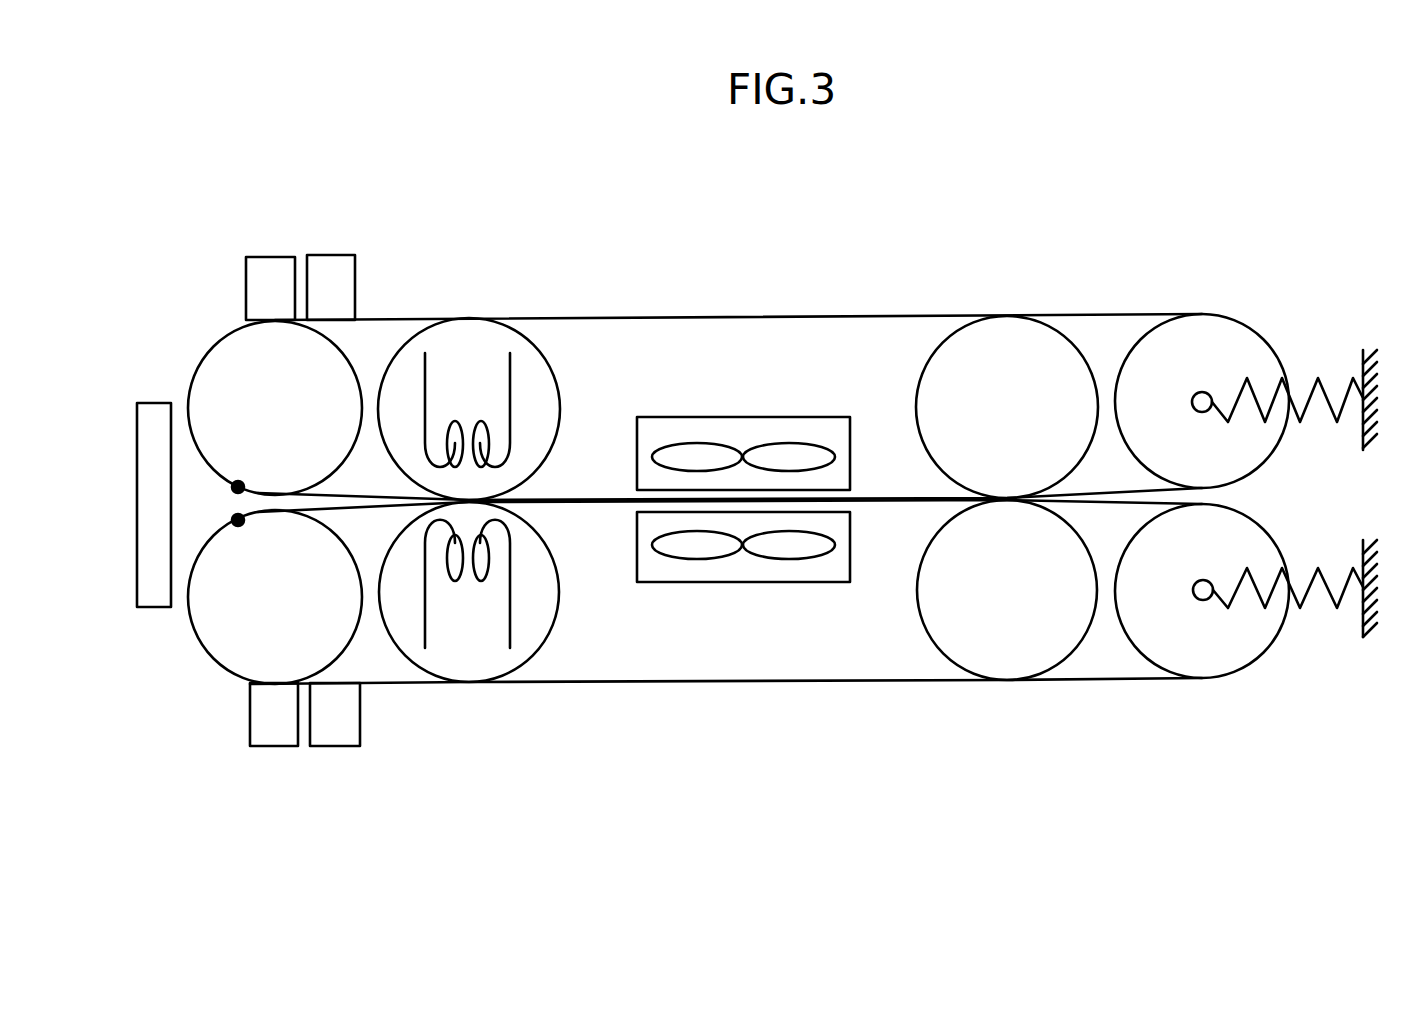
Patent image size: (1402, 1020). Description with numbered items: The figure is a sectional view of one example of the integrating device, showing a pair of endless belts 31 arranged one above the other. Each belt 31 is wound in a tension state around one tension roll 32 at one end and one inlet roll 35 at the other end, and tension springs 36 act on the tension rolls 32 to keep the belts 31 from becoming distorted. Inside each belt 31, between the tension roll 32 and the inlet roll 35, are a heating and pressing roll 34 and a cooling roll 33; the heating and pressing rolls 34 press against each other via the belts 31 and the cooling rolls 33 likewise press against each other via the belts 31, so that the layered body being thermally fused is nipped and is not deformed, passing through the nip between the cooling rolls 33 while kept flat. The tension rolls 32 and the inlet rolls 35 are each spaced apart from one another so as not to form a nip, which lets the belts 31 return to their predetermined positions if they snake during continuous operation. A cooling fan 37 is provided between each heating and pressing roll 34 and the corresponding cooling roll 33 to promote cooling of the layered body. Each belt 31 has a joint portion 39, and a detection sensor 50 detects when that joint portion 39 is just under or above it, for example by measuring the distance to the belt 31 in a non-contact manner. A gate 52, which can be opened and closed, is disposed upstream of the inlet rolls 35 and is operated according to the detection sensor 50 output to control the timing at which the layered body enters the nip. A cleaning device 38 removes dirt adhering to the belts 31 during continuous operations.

The belt 31 is at (865, 683).
The tension roll 32 is at (1217, 662).
The cooling roll 33 is at (1015, 662).
The heating and pressing roll 34 is at (502, 662).
The inlet roll 35 is at (193, 628).
The tension spring 36 is at (1328, 600).
The cooling fan 37 is at (742, 582).
The cleaning device 38 is at (262, 257).
The joint portion 39 is at (238, 487).
The detection sensor 50 is at (345, 255).
The gate 52 is at (137, 432).